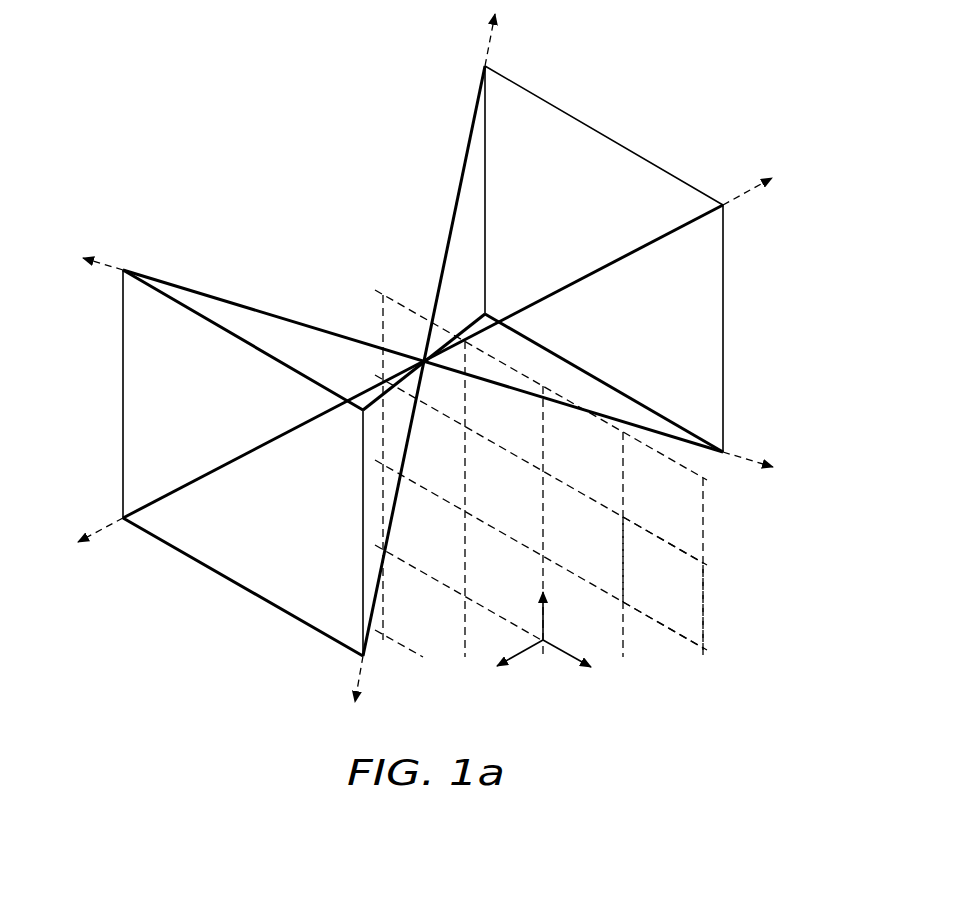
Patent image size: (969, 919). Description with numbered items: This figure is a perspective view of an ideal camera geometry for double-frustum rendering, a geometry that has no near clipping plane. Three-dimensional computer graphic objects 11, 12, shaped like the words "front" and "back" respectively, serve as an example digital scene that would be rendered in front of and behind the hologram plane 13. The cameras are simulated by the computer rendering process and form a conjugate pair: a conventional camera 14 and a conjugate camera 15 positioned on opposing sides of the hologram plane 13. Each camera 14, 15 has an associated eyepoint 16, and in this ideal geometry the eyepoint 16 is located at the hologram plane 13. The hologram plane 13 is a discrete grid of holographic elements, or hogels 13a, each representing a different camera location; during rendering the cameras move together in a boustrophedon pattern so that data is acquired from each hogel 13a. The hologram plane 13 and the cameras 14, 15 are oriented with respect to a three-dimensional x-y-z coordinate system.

The computer graphic object 11 is at (230, 380).
The computer graphic object 12 is at (627, 328).
The hologram plane 13 is at (705, 520).
The holographic element (hogel) 13a is at (684, 600).
The conventional camera 14 is at (667, 198).
The conjugate camera 15 is at (248, 565).
The eyepoint 16 is at (418, 358).